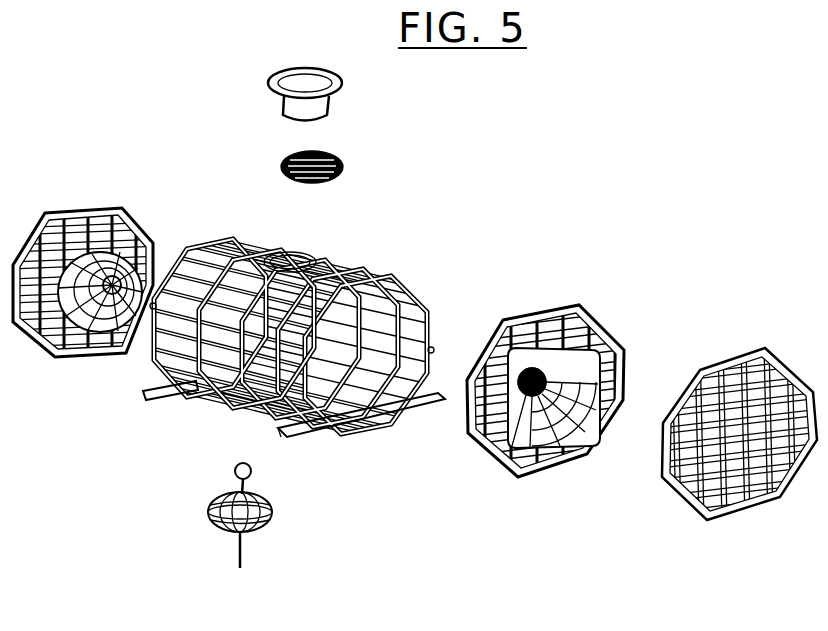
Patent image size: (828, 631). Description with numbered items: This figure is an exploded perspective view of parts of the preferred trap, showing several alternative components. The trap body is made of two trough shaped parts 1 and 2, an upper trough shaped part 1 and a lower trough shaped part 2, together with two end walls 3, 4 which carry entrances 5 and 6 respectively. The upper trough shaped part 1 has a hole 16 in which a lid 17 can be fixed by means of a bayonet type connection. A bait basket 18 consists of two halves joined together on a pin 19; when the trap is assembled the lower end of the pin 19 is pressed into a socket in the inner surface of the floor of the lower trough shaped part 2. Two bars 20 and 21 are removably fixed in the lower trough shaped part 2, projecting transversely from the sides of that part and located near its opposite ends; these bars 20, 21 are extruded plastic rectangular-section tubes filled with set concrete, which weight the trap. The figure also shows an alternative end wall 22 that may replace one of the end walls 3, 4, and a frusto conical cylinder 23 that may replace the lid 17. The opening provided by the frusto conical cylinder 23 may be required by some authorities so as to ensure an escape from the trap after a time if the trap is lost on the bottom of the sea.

The upper trough shaped part 1 is at (376, 272).
The lower trough shaped part 2 is at (235, 398).
The end wall 3 is at (547, 409).
The end wall 4 is at (96, 268).
The entrance 5 is at (552, 455).
The entrance 6 is at (150, 270).
The hole 16 is at (286, 258).
The lid 17 is at (343, 168).
The bait basket 18 is at (268, 498).
The pin 19 is at (237, 487).
The bar 20 is at (430, 412).
The bar 21 is at (165, 398).
The alternative end wall 22 is at (733, 512).
The frusto conical cylinder 23 is at (322, 100).